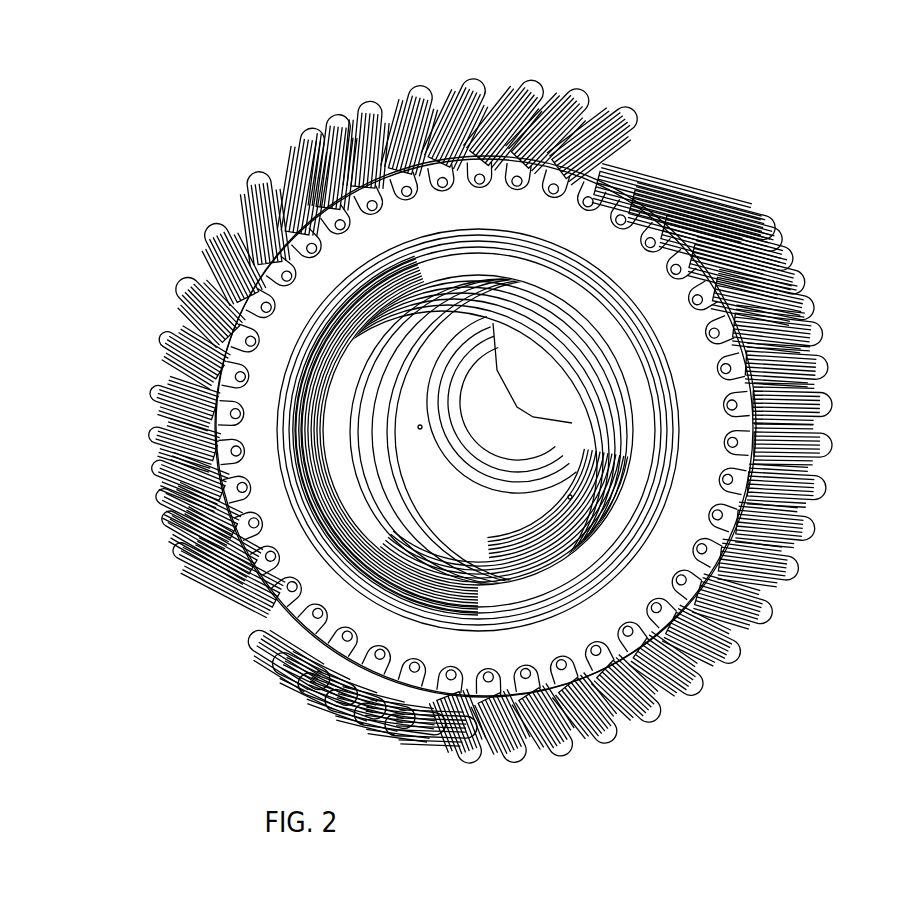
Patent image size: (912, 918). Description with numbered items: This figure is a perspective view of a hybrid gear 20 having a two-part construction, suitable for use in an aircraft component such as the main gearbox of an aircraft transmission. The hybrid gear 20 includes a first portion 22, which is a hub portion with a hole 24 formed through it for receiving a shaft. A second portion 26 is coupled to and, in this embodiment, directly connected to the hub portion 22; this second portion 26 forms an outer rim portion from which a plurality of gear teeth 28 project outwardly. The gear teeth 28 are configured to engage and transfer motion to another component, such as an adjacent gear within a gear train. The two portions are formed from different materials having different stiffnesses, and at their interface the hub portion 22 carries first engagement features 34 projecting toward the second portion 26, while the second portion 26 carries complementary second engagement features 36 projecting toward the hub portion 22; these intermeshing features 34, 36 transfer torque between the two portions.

The hybrid gear 20 is at (169, 110).
The first portion 22 is at (691, 387).
The hole 24 is at (640, 442).
The second portion 26 is at (489, 80).
The gear teeth 28 is at (673, 134).
The first engagement features 34 is at (369, 96).
The second engagement features 36 is at (340, 310).